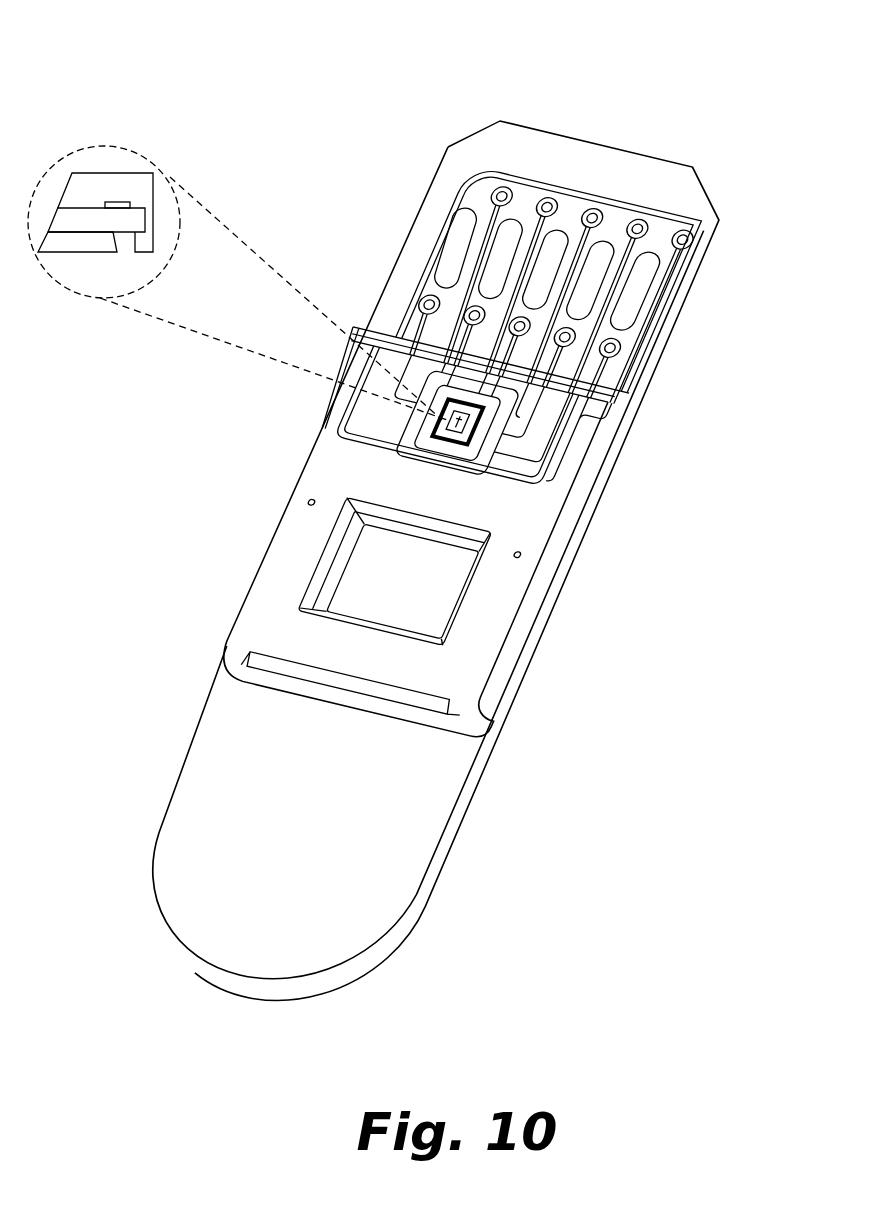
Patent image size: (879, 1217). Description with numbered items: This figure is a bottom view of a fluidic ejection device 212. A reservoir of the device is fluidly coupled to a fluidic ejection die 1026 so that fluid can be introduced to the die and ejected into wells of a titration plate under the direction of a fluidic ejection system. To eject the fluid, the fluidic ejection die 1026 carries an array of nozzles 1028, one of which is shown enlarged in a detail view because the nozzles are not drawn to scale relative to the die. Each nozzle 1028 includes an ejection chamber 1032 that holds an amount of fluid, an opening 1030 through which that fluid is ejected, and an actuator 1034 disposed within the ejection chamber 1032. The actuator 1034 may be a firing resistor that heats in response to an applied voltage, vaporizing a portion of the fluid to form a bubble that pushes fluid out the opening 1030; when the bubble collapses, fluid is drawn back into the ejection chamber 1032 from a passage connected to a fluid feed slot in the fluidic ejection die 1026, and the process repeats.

The fluidic ejection device 212 is at (684, 92).
The fluidic ejection die 1026 is at (457, 421).
The nozzle 1028 is at (52, 282).
The opening 1030 is at (127, 240).
The ejection chamber 1032 is at (127, 223).
The actuator 1034 is at (108, 203).